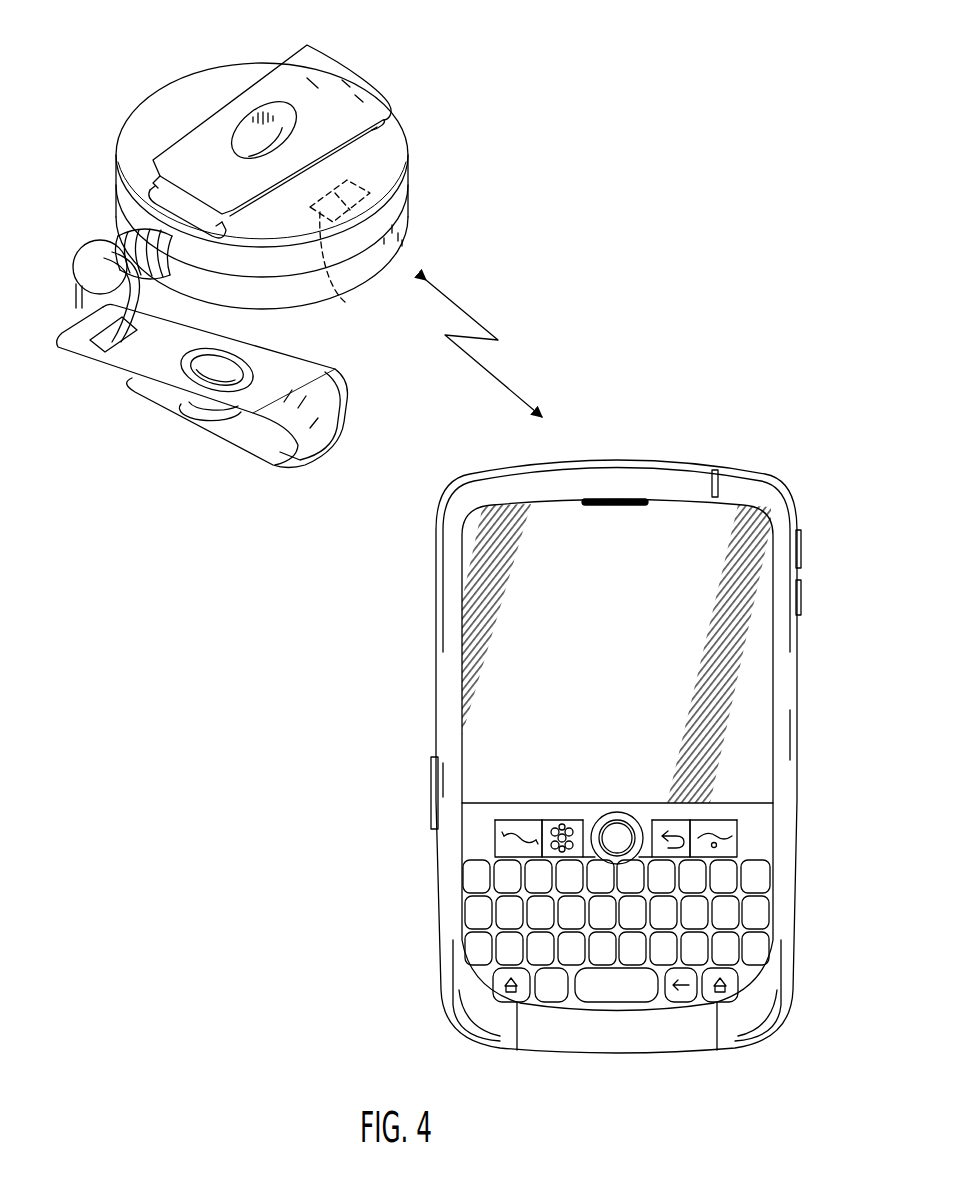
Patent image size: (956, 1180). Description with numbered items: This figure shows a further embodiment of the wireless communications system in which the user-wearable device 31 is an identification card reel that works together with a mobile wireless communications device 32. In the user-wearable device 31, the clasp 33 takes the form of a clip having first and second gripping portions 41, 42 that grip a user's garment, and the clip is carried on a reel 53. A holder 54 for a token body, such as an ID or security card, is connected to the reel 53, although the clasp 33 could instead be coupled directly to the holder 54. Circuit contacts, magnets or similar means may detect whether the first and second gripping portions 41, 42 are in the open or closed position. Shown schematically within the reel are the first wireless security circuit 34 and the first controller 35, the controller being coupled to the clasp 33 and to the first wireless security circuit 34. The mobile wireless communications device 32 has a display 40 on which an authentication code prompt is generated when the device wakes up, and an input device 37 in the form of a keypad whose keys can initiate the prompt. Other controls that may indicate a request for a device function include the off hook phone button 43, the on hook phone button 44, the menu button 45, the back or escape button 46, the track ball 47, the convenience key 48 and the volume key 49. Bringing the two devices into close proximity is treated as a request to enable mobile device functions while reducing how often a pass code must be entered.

The user-wearable device 31 is at (430, 77).
The mobile wireless communications device 32 is at (393, 985).
The clasp 33 is at (334, 53).
The first wireless security circuit 34 is at (345, 302).
The first controller 35 is at (368, 181).
The input device 37 is at (765, 905).
The display 40 is at (458, 612).
The first gripping portion 41 is at (183, 137).
The second gripping portion 42 is at (160, 182).
The off hook phone button 43 is at (502, 838).
The on hook phone button 44 is at (722, 828).
The menu button 45 is at (555, 825).
The back or escape button 46 is at (677, 828).
The track ball 47 is at (627, 830).
The convenience key 48 is at (431, 780).
The volume key 49 is at (802, 548).
The reel 53 is at (222, 62).
The holder 54 is at (254, 441).